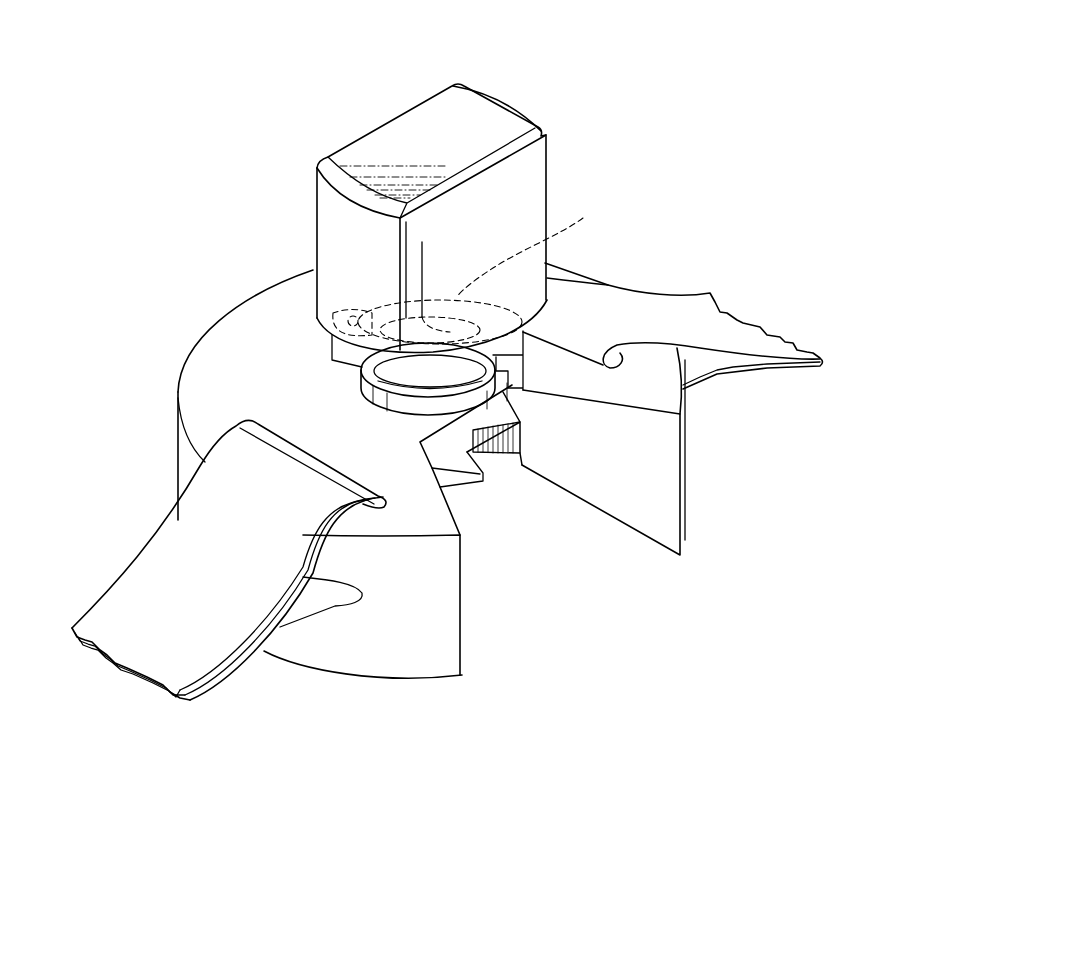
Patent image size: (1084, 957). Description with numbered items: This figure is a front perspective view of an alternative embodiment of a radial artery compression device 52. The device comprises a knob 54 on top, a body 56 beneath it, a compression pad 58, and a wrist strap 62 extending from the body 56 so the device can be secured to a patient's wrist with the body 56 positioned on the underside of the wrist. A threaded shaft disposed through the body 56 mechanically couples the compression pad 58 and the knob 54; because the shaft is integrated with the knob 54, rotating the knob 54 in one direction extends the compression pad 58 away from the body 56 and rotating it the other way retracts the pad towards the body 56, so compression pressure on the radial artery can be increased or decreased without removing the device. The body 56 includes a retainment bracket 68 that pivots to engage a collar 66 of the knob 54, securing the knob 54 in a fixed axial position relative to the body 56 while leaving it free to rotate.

The radial artery compression device 52 is at (612, 68).
The knob 54 is at (381, 147).
The body 56 is at (260, 311).
The compression pad 58 is at (455, 478).
The wrist strap 62 is at (160, 597).
The collar 66 is at (395, 400).
The retainment bracket 68 is at (583, 218).